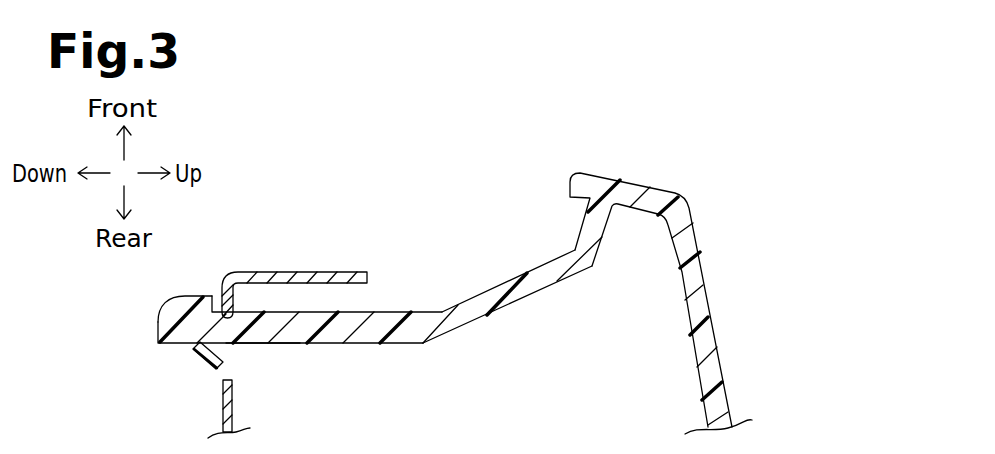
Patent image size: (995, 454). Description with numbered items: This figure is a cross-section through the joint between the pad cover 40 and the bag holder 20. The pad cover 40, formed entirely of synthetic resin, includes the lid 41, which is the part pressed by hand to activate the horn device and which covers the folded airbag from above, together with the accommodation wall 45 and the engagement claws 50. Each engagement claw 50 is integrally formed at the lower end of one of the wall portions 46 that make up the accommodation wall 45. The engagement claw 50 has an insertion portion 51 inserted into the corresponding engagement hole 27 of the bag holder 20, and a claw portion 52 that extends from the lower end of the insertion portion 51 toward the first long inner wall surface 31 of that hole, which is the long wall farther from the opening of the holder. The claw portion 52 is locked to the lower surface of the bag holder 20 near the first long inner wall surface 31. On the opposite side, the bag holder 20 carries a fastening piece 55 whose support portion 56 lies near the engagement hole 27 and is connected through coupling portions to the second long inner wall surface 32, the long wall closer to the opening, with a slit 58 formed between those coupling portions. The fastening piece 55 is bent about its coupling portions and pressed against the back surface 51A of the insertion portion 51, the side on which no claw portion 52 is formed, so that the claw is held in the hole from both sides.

The bag holder 20 is at (365, 247).
The engagement hole 27 is at (308, 262).
The first long inner wall surface 31 is at (237, 272).
The engagement claw 50 is at (95, 297).
The insertion portion 51 is at (158, 335).
The back surface 51A is at (230, 347).
The claw portion 52 is at (176, 298).
The accommodation wall 45 is at (512, 287).
The wall portion 46 is at (483, 288).
The pad cover 40 is at (697, 303).
The lid 41 is at (820, 311).
The fastening piece 55 is at (195, 431).
The support portion 56 is at (195, 360).
The second long inner wall surface 32 is at (284, 408).
The slit 58 is at (233, 378).